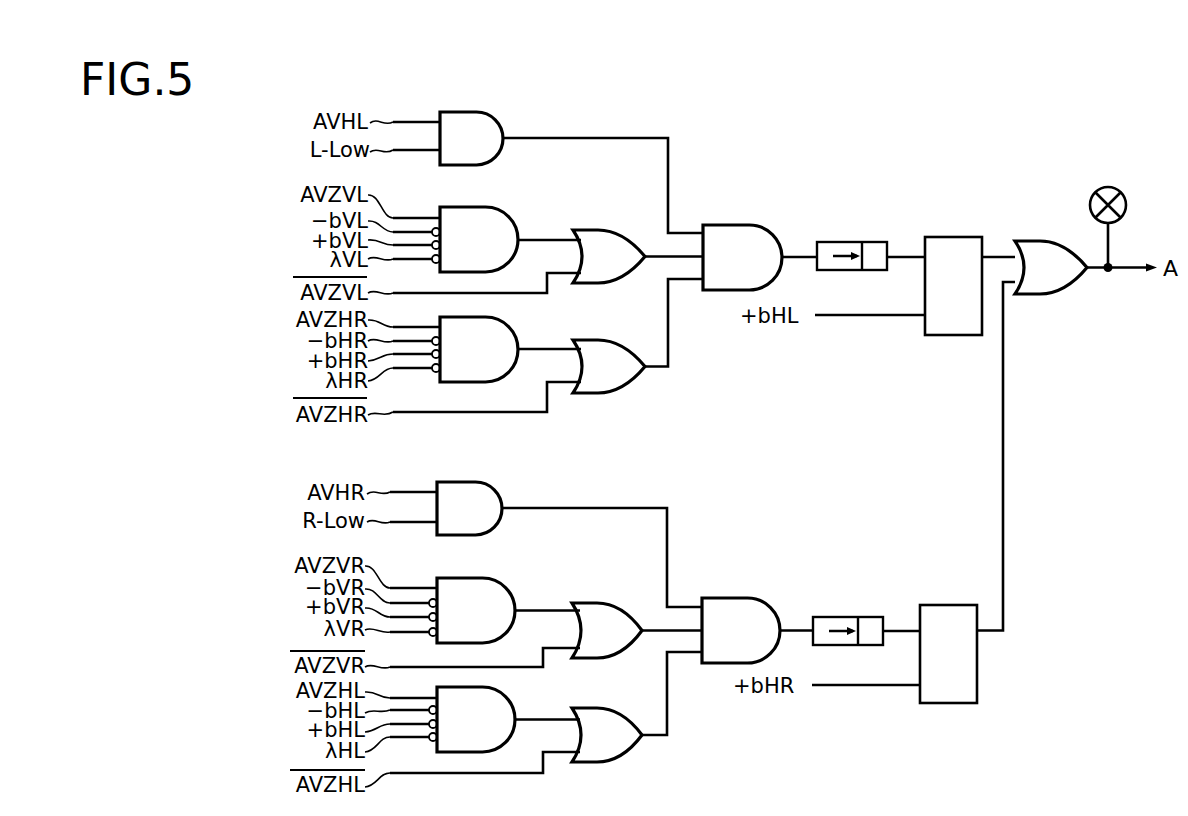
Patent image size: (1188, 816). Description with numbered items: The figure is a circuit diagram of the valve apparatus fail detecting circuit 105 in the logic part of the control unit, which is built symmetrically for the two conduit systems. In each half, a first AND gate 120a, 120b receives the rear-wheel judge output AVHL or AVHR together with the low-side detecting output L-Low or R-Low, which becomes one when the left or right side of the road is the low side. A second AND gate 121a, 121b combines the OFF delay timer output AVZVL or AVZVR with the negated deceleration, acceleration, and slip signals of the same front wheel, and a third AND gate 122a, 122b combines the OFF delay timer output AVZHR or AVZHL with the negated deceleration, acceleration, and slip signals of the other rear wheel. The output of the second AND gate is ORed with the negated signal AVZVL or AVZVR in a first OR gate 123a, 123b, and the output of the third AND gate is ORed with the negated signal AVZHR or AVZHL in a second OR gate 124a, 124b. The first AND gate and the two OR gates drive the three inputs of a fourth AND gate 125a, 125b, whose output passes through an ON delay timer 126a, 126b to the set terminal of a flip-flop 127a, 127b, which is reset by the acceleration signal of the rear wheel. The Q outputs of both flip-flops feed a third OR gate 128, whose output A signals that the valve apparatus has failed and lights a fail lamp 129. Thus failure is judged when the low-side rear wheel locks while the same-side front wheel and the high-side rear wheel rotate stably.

The valve apparatus fail detecting circuit 105 is at (935, 112).
The first AND gate 120a is at (472, 112).
The second AND gate 121a is at (493, 207).
The third AND gate 122a is at (493, 317).
The first OR gate 123a is at (613, 230).
The second OR gate 124a is at (613, 340).
The fourth AND gate 125a is at (732, 225).
The ON delay timer 126a is at (841, 242).
The flip-flop 127a is at (941, 237).
The third OR gate 128 is at (1043, 241).
The fail lamp 129 is at (1093, 196).
The first AND gate 120b is at (468, 482).
The second AND gate 121b is at (490, 578).
The third AND gate 122b is at (492, 687).
The first OR gate 123b is at (608, 603).
The second OR gate 124b is at (610, 708).
The fourth AND gate 125b is at (732, 598).
The ON delay timer 126b is at (840, 617).
The flip-flop 127b is at (937, 605).